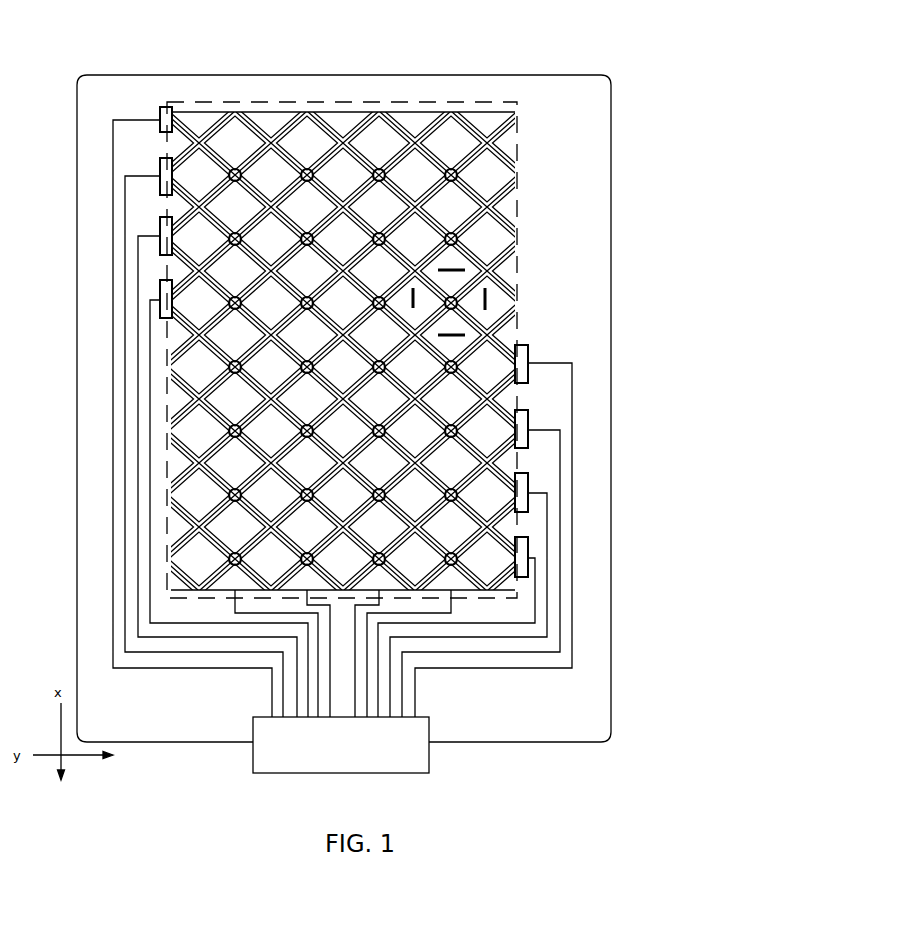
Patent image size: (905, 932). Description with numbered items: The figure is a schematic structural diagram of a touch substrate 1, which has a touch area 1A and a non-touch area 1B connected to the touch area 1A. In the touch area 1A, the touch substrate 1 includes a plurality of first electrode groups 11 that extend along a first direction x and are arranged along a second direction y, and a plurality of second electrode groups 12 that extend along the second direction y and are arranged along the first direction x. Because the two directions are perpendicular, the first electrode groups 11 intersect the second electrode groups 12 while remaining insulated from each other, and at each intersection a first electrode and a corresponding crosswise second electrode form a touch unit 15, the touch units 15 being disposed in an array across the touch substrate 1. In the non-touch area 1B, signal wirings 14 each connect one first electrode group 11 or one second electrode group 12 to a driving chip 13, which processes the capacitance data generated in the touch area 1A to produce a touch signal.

The touch substrate 1 is at (192, 57).
The touch area 1A is at (452, 324).
The non-touch area 1B is at (433, 92).
The first electrode groups 11 is at (450, 207).
The second electrode groups 12 is at (488, 235).
The driving chip 13 is at (412, 753).
The signal wirings 14 is at (572, 460).
The touch unit 15 is at (485, 300).